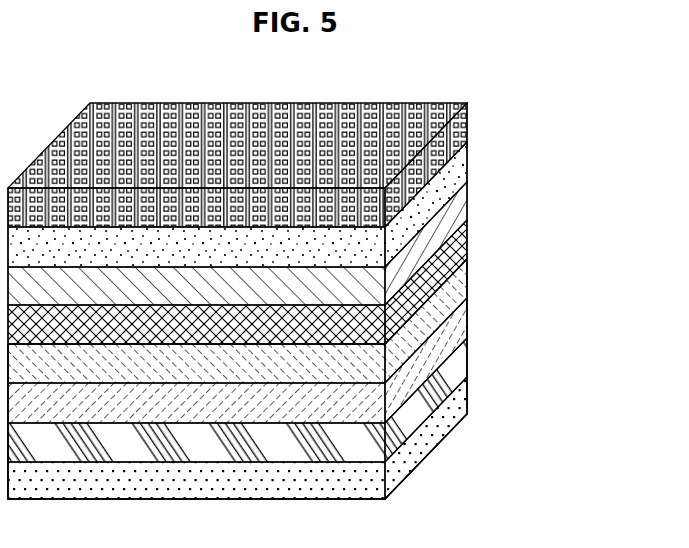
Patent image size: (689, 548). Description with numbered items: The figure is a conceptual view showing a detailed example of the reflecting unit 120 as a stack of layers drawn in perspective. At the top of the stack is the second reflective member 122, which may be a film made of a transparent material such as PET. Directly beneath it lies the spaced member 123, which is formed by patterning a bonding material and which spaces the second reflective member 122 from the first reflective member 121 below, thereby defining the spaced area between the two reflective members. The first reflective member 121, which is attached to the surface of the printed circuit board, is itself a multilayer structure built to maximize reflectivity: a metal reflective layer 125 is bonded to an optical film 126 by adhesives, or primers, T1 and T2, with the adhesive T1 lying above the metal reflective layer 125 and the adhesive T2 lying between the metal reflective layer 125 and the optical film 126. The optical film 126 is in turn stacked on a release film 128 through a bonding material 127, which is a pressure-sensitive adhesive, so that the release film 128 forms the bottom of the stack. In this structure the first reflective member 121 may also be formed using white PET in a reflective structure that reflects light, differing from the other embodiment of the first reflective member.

The reflecting unit 120 is at (97, 65).
The first reflective member 121 is at (538, 288).
The second reflective member 122 is at (470, 123).
The spaced member 123 is at (470, 162).
The adhesive (primer) T1 is at (470, 205).
The metal reflective layer 125 is at (470, 247).
The adhesive (primer) T2 is at (470, 283).
The optical film 126 is at (470, 318).
The bonding material (PSA) 127 is at (470, 358).
The release film 128 is at (470, 395).